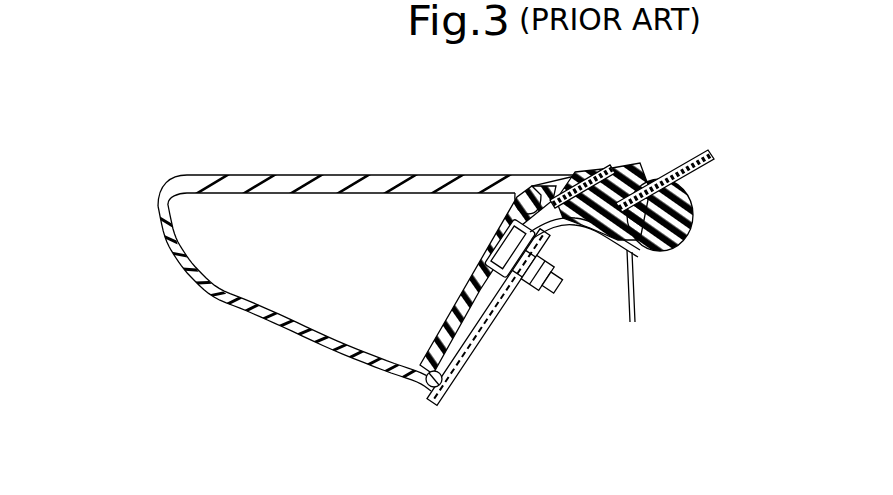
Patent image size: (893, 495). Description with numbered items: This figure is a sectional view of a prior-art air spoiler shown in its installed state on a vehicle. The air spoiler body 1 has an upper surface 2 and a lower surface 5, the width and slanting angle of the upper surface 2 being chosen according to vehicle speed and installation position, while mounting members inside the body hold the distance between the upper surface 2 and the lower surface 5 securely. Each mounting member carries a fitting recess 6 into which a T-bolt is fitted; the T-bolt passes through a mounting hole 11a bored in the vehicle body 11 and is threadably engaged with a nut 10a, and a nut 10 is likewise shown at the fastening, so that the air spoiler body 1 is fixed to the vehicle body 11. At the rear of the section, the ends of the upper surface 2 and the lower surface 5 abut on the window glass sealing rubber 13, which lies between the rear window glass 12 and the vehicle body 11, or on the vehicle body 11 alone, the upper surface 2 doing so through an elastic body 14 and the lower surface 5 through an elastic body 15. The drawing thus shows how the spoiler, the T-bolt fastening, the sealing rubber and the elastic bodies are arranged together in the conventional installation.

The air spoiler body 1 is at (158, 203).
The upper surface 2 is at (322, 175).
The lower surface 5 is at (250, 313).
The fitting recess 6 is at (490, 228).
The nut 10 is at (556, 282).
The nut 10a is at (538, 291).
The vehicle body 11 is at (465, 358).
The mounting hole 11a is at (528, 285).
The rear window glass 12 is at (688, 160).
The window glass sealing rubber 13 is at (678, 240).
The elastic body 14 is at (590, 172).
The elastic body 15 is at (420, 395).